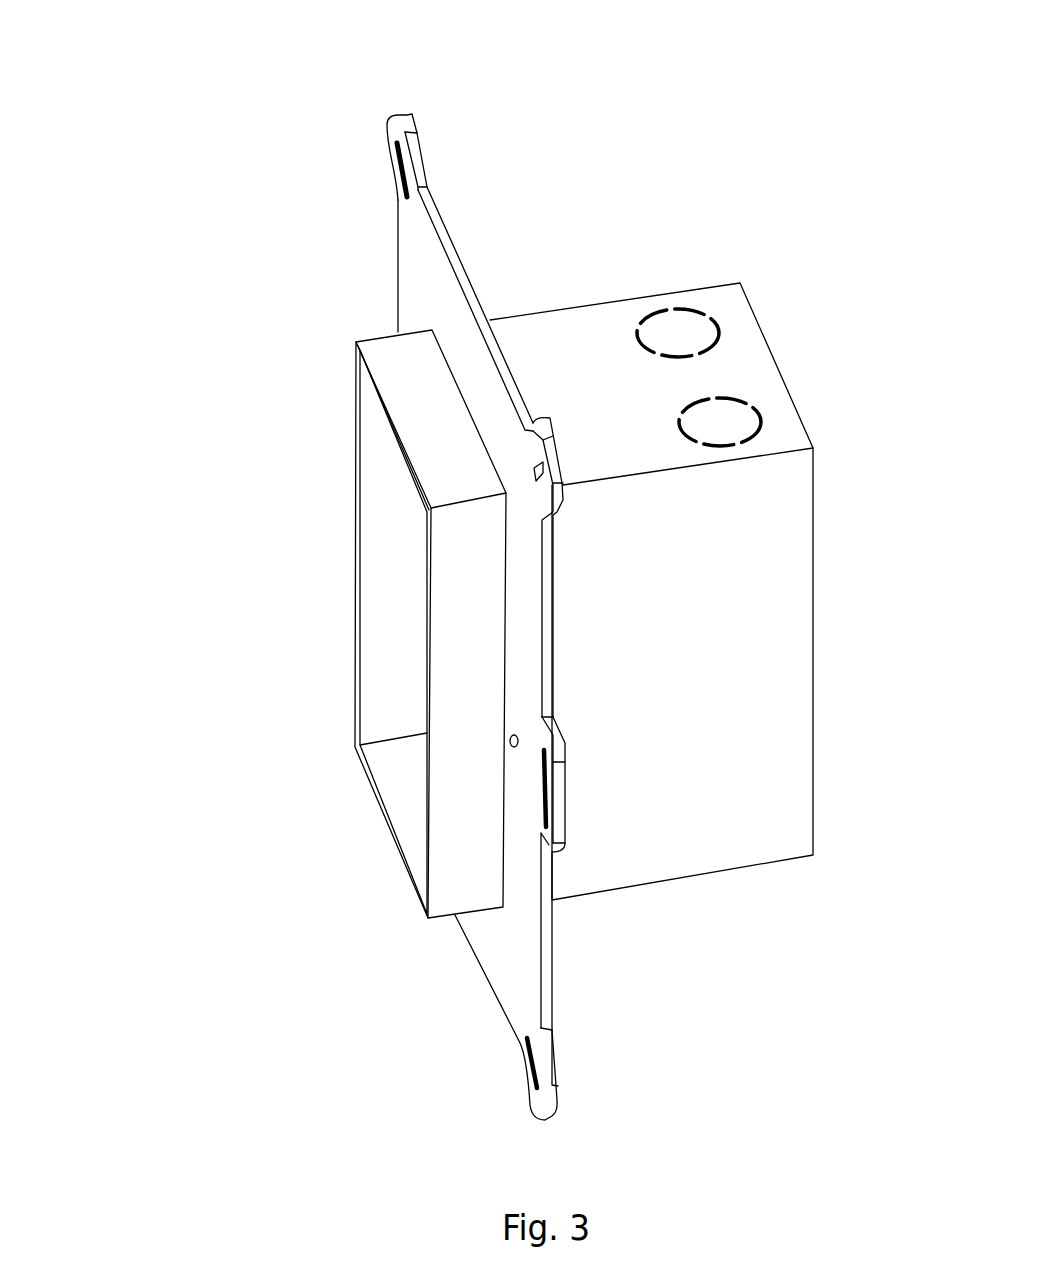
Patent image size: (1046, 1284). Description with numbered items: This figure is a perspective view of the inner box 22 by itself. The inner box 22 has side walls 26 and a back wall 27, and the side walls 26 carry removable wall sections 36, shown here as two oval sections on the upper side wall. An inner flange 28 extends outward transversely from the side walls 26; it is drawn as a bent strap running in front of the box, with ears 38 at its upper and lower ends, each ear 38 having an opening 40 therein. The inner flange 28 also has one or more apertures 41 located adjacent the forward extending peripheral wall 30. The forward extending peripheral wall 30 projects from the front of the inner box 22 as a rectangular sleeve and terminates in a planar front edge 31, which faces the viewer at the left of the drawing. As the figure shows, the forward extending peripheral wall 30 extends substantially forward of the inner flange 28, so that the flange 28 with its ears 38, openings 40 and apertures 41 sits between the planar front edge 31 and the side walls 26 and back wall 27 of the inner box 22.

The inner box 22 is at (177, 217).
The side walls 26 is at (688, 644).
The back wall 27 is at (838, 558).
The inner flange 28 is at (438, 223).
The forward extending peripheral wall 30 is at (458, 446).
The planar front edge 31 is at (383, 405).
The removable wall sections 36 is at (690, 342).
The ears 38 is at (410, 112).
The openings 40 is at (540, 478).
The apertures 41 is at (517, 732).